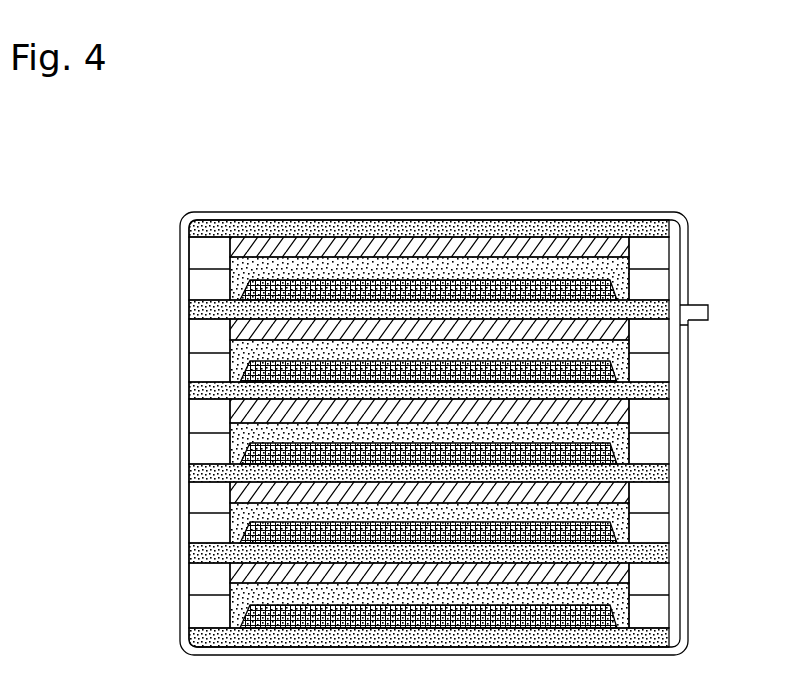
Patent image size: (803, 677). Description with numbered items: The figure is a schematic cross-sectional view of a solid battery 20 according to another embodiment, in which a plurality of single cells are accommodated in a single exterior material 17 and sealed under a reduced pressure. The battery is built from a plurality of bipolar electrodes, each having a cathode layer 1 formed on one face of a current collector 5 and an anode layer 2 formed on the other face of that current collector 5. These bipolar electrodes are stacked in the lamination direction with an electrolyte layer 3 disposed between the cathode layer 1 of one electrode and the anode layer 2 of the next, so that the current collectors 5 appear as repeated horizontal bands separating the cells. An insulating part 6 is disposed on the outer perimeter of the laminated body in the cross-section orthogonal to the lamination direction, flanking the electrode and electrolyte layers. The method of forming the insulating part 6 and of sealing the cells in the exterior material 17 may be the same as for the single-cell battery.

The solid battery 20 is at (427, 128).
The exterior material 17 is at (685, 239).
The current collector 5 is at (650, 308).
The cathode layer 1 is at (630, 331).
The electrolyte layer 3 is at (615, 352).
The anode layer 2 is at (632, 377).
The insulating part 6 is at (186, 345).